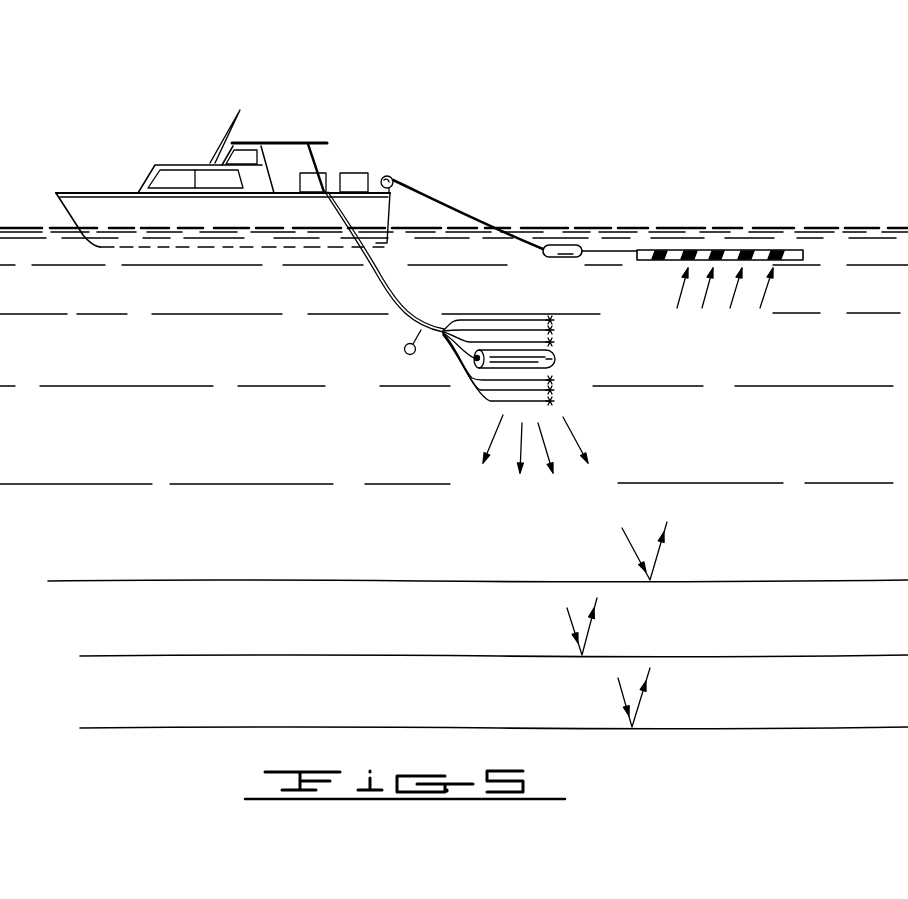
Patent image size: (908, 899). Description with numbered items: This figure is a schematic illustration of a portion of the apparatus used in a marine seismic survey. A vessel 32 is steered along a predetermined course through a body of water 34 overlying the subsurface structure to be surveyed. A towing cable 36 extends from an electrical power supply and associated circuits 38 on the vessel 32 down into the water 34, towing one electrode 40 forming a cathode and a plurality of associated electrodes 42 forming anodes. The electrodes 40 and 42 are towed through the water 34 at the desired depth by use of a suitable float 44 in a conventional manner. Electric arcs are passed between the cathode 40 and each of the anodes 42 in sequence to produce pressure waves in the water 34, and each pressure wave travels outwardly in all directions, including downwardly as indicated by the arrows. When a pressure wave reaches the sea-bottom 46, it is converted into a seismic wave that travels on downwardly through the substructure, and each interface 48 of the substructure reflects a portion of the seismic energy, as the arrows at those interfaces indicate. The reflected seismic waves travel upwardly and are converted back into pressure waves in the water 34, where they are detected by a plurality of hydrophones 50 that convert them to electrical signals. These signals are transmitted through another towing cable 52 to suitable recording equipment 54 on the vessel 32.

The vessel 32 is at (89, 202).
The water 34 is at (200, 432).
The towing cable 36 is at (377, 272).
The electrical power supply and associated circuits 38 is at (303, 172).
The electrode forming a cathode 40 is at (553, 362).
The electrodes forming anodes 42 is at (553, 342).
The float 44 is at (404, 348).
The sea-bottom 46 is at (333, 557).
The interface 48 is at (347, 632).
The hydrophones 50 is at (750, 254).
The towing cable 52 is at (447, 204).
The recording equipment 54 is at (350, 172).